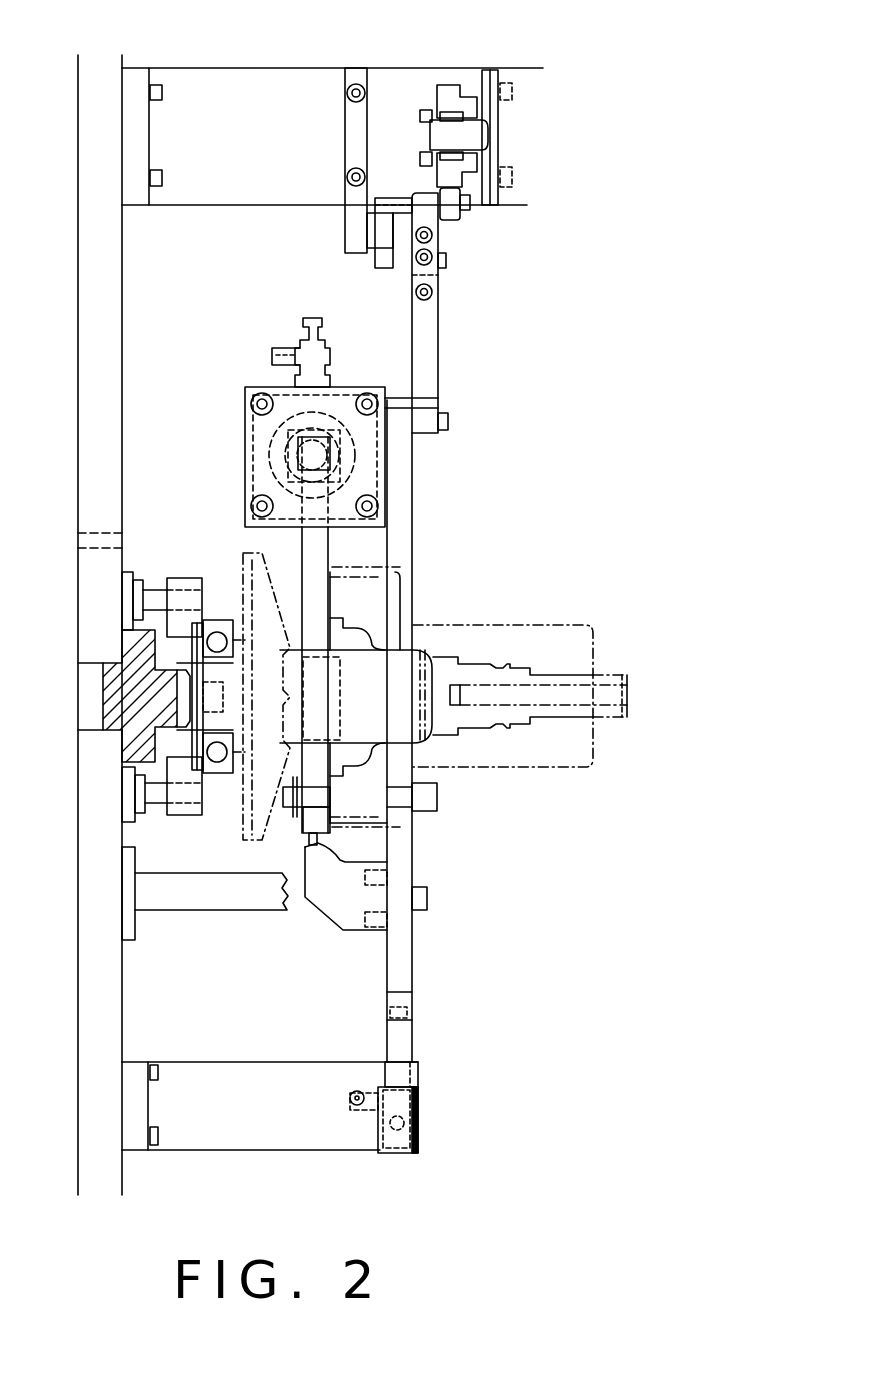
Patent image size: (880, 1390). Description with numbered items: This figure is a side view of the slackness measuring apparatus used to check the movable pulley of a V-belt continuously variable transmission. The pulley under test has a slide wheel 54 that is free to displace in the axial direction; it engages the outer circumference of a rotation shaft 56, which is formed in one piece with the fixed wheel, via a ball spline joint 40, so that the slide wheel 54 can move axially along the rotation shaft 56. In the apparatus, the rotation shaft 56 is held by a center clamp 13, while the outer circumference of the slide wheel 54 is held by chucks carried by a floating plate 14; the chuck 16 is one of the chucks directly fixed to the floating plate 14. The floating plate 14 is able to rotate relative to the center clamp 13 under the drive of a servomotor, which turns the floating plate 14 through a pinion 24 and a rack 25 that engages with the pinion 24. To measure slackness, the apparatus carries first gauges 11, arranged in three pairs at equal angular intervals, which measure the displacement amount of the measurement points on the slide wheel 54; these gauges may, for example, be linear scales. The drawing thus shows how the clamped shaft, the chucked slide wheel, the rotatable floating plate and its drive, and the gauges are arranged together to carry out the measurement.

The first gauge 11 is at (387, 476).
The center clamp 13 is at (130, 750).
The floating plate 14 is at (400, 953).
The chuck 16 is at (348, 923).
The pinion 24 is at (452, 85).
The rack 25 is at (452, 203).
The ball spline joint 40 is at (417, 650).
The slide wheel 54 is at (325, 557).
The rotation shaft 56 is at (477, 662).